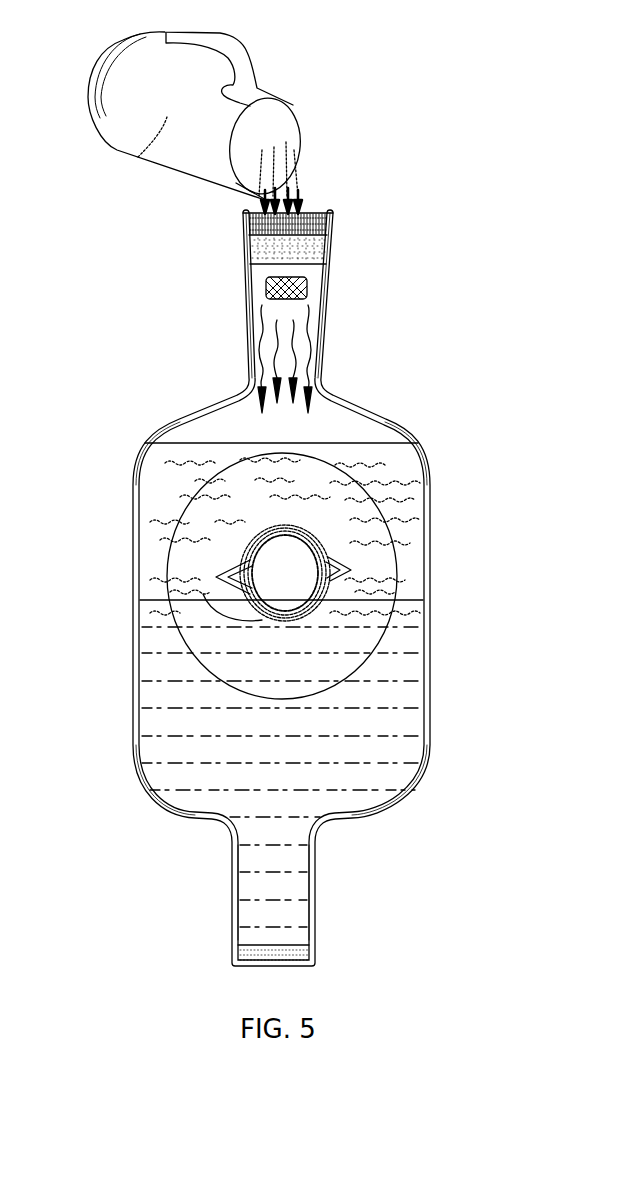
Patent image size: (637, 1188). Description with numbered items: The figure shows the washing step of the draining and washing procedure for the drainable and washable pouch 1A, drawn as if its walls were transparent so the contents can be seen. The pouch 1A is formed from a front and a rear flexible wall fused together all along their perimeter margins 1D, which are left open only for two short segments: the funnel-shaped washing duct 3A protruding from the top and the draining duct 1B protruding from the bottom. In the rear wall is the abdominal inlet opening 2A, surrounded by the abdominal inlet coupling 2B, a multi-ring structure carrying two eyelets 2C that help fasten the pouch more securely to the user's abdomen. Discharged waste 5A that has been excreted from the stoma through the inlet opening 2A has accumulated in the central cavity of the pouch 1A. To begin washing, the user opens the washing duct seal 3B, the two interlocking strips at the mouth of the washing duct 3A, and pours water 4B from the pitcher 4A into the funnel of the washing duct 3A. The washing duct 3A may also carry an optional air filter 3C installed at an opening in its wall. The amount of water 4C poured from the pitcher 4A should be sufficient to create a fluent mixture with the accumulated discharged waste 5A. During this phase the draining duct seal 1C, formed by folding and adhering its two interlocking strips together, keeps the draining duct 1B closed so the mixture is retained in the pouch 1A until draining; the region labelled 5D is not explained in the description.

The washable pouch 1A is at (170, 692).
The draining duct 1B is at (238, 893).
The draining duct seal 1C is at (238, 955).
The perimeter margins 1D is at (140, 478).
The abdominal inlet opening 2A is at (281, 575).
The abdominal inlet coupling 2B is at (203, 594).
The eyelets 2C is at (325, 556).
The washing duct 3A is at (258, 346).
The washing duct seal 3B is at (248, 223).
The air filter 3C is at (266, 290).
The pitcher 4A is at (138, 157).
The water 4B is at (300, 181).
The amount of water 4C is at (430, 500).
The discharged waste 5A is at (403, 787).
The liquid region 5D is at (269, 543).